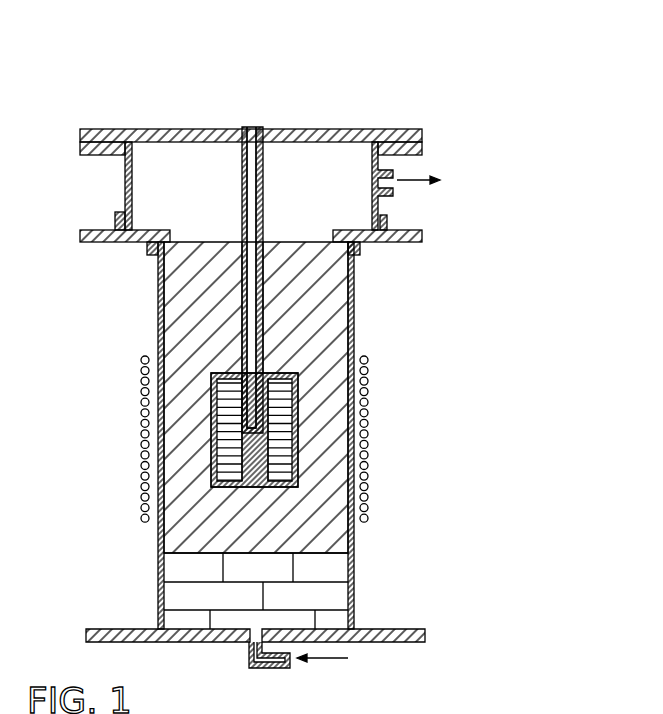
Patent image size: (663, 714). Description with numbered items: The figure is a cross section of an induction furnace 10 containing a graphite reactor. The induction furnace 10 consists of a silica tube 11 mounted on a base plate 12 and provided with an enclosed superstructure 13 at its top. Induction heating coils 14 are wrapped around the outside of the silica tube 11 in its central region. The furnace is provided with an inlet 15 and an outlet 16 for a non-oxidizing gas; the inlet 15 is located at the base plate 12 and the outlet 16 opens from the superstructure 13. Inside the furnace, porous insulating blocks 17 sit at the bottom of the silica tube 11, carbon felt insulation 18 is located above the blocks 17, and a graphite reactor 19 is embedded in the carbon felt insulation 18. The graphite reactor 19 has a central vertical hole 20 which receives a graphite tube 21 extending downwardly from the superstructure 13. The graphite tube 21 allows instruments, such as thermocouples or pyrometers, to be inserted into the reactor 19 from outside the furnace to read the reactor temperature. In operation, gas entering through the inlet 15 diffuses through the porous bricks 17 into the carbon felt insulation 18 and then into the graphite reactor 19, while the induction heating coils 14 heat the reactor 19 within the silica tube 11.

The induction furnace 10 is at (148, 118).
The silica tube 11 is at (355, 553).
The base plate 12 is at (402, 630).
The enclosed superstructure 13 is at (346, 100).
The induction heating coils 14 is at (368, 412).
The inlet 15 is at (248, 657).
The outlet 16 is at (393, 190).
The porous insulating blocks 17 is at (177, 594).
The carbon felt insulation 18 is at (193, 315).
The graphite reactor 19 is at (298, 458).
The central vertical hole 20 is at (272, 363).
The graphite tube 21 is at (263, 217).